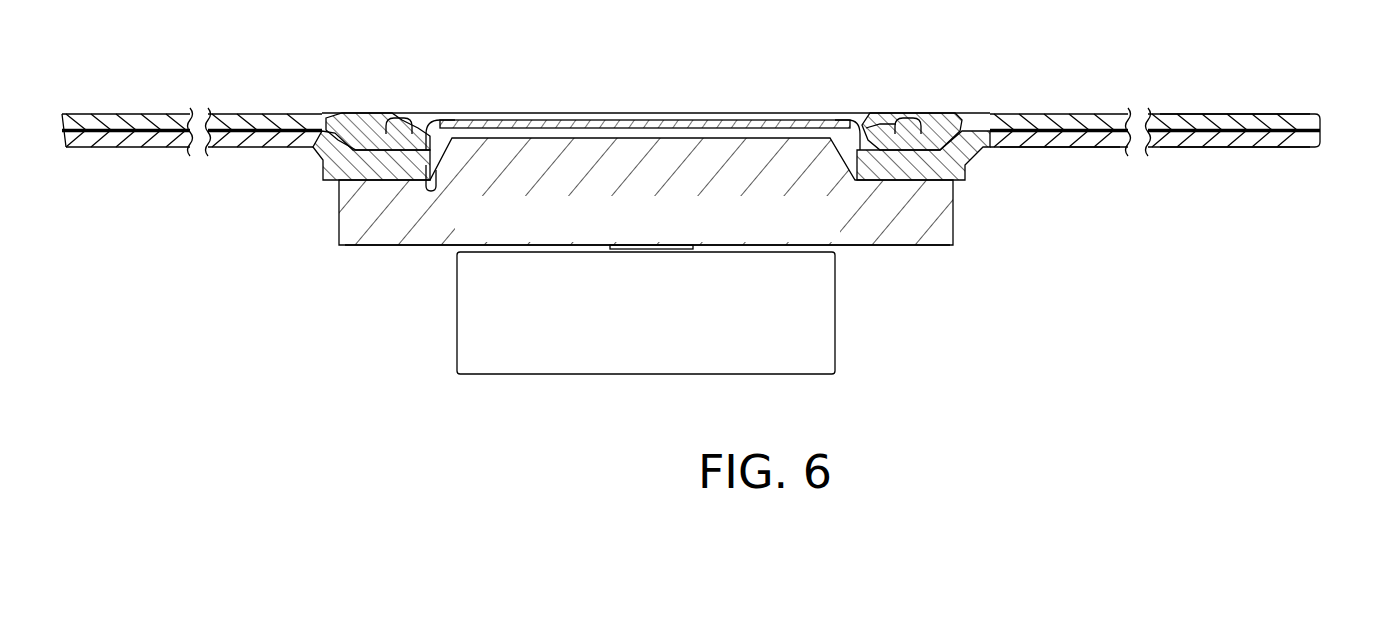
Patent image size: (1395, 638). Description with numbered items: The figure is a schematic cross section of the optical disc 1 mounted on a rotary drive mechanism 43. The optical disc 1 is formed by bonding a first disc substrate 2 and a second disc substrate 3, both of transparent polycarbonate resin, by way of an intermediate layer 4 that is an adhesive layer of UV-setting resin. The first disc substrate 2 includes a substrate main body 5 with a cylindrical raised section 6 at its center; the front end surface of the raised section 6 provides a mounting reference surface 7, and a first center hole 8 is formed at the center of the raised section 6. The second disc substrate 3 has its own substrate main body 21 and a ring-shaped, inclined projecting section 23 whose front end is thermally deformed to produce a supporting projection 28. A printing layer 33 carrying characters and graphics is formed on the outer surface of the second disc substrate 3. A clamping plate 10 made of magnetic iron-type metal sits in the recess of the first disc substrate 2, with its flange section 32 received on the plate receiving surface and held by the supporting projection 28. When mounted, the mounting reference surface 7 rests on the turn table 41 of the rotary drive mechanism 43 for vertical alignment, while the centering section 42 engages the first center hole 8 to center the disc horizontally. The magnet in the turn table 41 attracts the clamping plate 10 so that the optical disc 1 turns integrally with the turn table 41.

The optical disc 1 is at (1287, 106).
The first disc substrate 2 is at (1312, 143).
The second disc substrate 3 is at (1307, 120).
The intermediate layer 4 is at (1318, 130).
The substrate main body 5 is at (1088, 148).
The raised section 6 is at (966, 166).
The mounting reference surface 7 is at (954, 205).
The first center hole 8 is at (437, 116).
The clamping plate 10 is at (770, 112).
The substrate main body 21 is at (1072, 119).
The projecting section 23 is at (368, 113).
The supporting projection 28 is at (402, 118).
The flange section 32 is at (880, 125).
The printing layer 33 is at (155, 112).
The turn table 41 is at (954, 242).
The centering section 42 is at (732, 126).
The rotary drive mechanism 43 is at (820, 304).